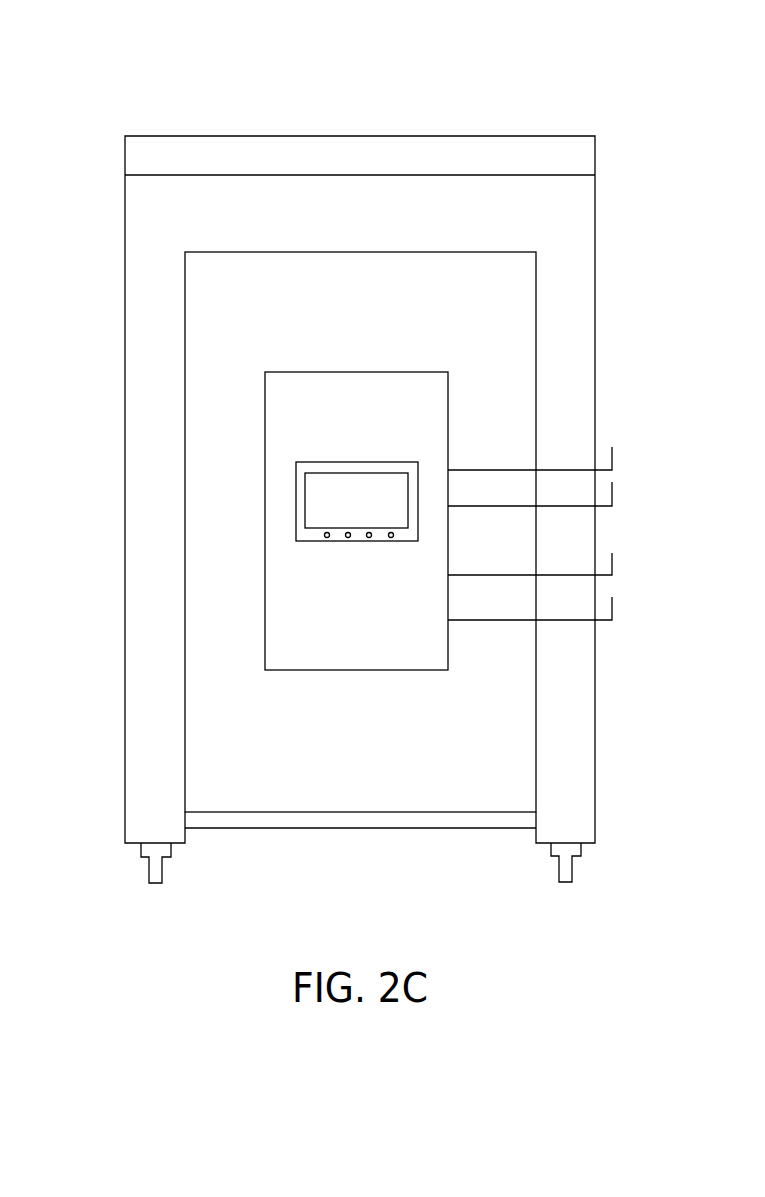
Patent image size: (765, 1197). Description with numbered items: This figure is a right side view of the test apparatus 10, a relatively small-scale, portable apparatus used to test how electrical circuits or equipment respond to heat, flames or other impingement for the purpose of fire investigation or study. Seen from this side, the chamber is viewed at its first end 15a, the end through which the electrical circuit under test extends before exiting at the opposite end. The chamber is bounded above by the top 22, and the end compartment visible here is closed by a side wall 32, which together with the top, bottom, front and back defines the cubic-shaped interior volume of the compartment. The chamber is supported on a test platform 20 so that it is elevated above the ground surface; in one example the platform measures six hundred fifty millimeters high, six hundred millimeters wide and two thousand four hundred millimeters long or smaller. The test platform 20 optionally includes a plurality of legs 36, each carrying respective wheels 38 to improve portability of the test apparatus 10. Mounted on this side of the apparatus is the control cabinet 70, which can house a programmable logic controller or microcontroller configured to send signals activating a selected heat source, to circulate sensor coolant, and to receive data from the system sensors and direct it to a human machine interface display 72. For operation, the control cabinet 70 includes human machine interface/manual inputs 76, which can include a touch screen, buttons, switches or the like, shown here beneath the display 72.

The test apparatus 10 is at (626, 52).
The first end 15a is at (96, 173).
The test platform 20 is at (100, 693).
The top 22 is at (205, 136).
The side wall 32 is at (498, 325).
The legs 36 is at (125, 792).
The wheels 38 is at (149, 878).
The control cabinet 70 is at (313, 568).
The human machine interface display 72 is at (350, 490).
The human machine interface/manual inputs 76 is at (368, 530).